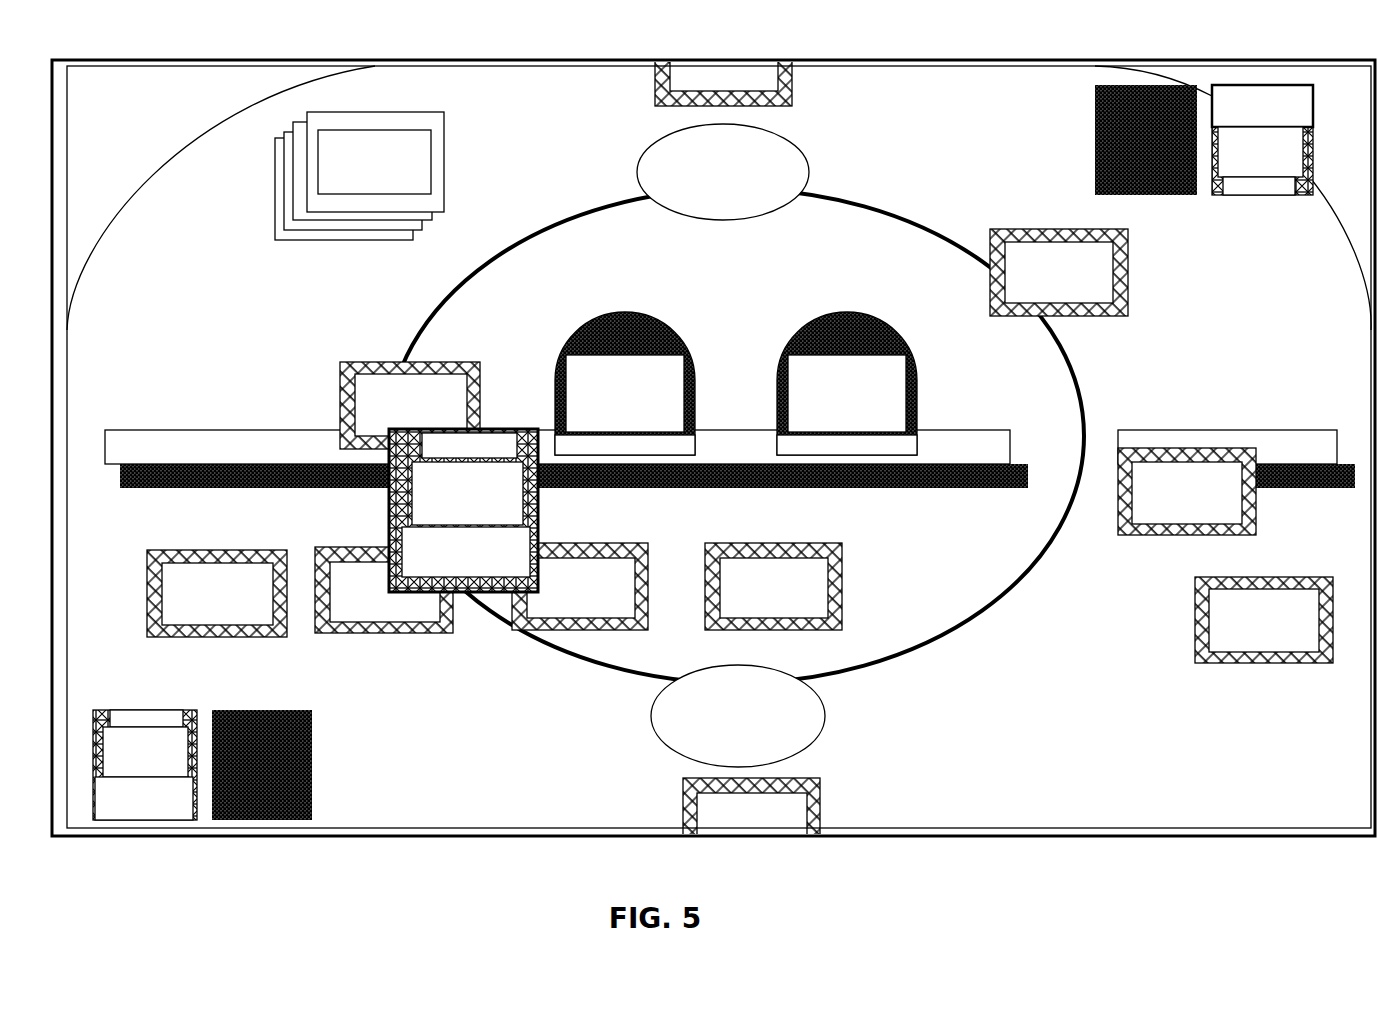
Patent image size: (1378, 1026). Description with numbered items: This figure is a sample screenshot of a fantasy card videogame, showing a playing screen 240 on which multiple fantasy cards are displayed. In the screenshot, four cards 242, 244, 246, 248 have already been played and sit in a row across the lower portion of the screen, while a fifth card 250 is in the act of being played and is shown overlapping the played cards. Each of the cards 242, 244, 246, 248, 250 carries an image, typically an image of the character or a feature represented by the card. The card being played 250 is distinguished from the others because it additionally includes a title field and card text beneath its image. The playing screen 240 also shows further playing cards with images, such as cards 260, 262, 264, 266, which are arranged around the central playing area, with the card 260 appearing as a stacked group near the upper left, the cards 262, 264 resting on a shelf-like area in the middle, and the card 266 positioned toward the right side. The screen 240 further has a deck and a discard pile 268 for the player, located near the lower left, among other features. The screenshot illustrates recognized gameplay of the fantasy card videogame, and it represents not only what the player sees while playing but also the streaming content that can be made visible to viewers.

The playing screen 240 is at (713, 439).
The card 242 is at (230, 638).
The card 244 is at (382, 635).
The card 246 is at (593, 543).
The card 248 is at (775, 543).
The card being played 250 is at (488, 595).
The playing card 260 is at (443, 157).
The playing card 262 is at (587, 325).
The playing card 264 is at (797, 330).
The playing card 266 is at (1256, 503).
The deck and discard pile 268 is at (348, 775).